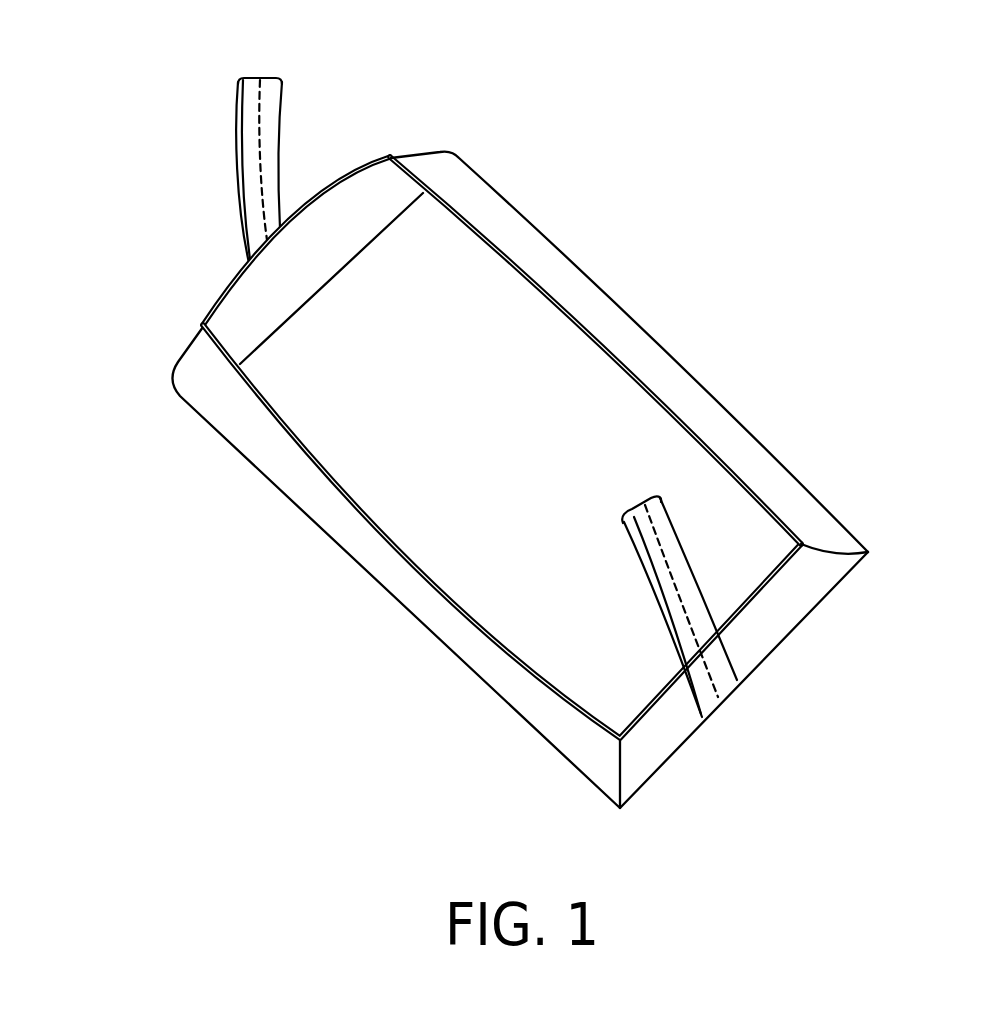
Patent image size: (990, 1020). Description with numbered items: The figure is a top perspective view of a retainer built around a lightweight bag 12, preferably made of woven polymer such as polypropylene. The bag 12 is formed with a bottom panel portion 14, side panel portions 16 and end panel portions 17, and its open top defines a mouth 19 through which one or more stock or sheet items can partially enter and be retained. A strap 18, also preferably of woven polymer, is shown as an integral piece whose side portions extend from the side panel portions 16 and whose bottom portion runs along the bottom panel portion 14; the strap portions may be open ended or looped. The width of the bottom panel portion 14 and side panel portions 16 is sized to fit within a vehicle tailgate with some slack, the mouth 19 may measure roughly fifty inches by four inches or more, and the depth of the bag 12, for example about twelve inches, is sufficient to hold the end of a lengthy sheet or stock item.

The bag 12 is at (205, 333).
The bottom panel portion 14 is at (475, 363).
The side panel portions 16 is at (695, 433).
The end panel portions 17 is at (788, 605).
The strap 18 is at (672, 560).
The mouth 19 is at (489, 618).